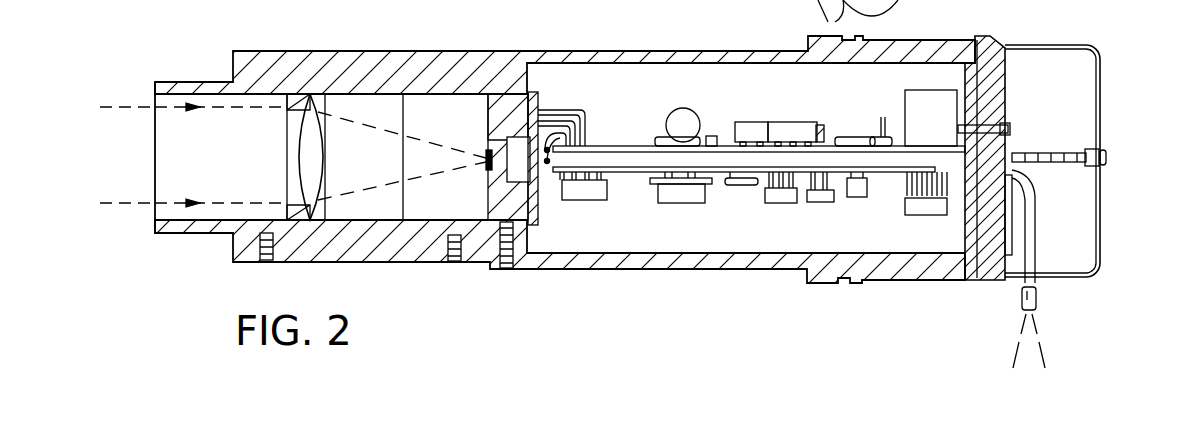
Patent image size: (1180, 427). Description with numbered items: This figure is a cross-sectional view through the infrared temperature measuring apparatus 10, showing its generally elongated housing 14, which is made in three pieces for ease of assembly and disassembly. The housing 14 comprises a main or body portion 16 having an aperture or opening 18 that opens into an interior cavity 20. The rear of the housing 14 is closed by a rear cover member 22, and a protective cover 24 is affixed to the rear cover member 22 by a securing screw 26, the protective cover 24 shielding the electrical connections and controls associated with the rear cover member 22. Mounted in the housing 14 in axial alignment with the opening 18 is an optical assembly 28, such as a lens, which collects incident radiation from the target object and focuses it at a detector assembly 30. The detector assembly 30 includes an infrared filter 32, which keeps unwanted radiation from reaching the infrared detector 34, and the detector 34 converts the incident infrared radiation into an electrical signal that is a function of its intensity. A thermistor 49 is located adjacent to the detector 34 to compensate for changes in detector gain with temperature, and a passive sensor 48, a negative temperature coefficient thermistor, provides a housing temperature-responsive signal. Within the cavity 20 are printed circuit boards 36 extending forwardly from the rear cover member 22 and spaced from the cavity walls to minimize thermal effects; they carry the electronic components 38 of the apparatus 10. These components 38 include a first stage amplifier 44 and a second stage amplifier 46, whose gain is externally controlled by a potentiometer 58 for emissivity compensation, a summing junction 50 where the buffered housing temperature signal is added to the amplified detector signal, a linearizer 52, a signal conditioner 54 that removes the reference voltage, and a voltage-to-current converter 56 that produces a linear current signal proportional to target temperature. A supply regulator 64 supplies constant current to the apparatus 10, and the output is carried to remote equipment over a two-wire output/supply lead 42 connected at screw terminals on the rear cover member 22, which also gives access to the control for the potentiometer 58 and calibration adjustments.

The apparatus 10 is at (618, 294).
The housing 14 is at (294, 50).
The main or body portion 16 is at (389, 51).
The aperture or opening 18 is at (208, 175).
The cavity 20 is at (630, 239).
The rear cover member 22 is at (993, 38).
The protective cover 24 is at (1101, 62).
The securing screw 26 is at (1057, 153).
The optical assembly 28 is at (293, 132).
The detector assembly 30 is at (534, 97).
The infrared filter 32 is at (487, 165).
The infrared detector 34 is at (533, 168).
The printed circuit boards 36 is at (892, 158).
The electronic components 38 is at (957, 88).
The two-wire output/supply lead 42 is at (1032, 233).
The first stage amplifier 44 is at (795, 130).
The second stage amplifier 46 is at (743, 126).
The passive sensor 48 is at (488, 128).
The thermistor 49 is at (488, 108).
The summing junction 50 is at (820, 126).
The linearizer 52 is at (608, 196).
The signal conditioner 54 is at (757, 186).
The voltage-to-current converter 56 is at (800, 203).
The potentiometer 58 is at (1003, 130).
The supply regulator 64 is at (833, 202).